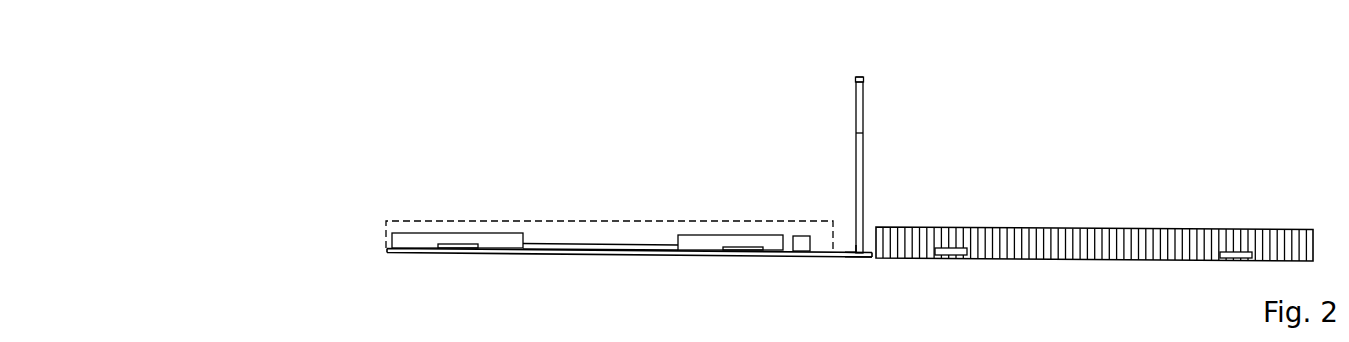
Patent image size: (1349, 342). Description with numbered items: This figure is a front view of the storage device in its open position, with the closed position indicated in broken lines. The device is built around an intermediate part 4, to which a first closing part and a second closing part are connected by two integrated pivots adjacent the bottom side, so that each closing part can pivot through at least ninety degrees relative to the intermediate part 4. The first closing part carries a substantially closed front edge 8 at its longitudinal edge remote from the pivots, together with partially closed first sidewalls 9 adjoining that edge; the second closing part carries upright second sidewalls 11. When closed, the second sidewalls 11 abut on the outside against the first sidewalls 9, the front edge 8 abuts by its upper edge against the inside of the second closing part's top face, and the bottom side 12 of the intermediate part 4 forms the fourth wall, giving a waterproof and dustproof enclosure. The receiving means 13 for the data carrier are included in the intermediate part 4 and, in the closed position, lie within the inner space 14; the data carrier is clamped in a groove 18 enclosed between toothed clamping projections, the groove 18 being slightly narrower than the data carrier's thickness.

The intermediate part 4 is at (865, 132).
The front edge 8 is at (401, 226).
The first sidewalls 9 is at (493, 241).
The second sidewall 11 is at (1062, 243).
The bottom side 12 is at (850, 243).
The receiving means 13 is at (860, 68).
The inner space 14 is at (593, 237).
The groove 18 is at (864, 78).